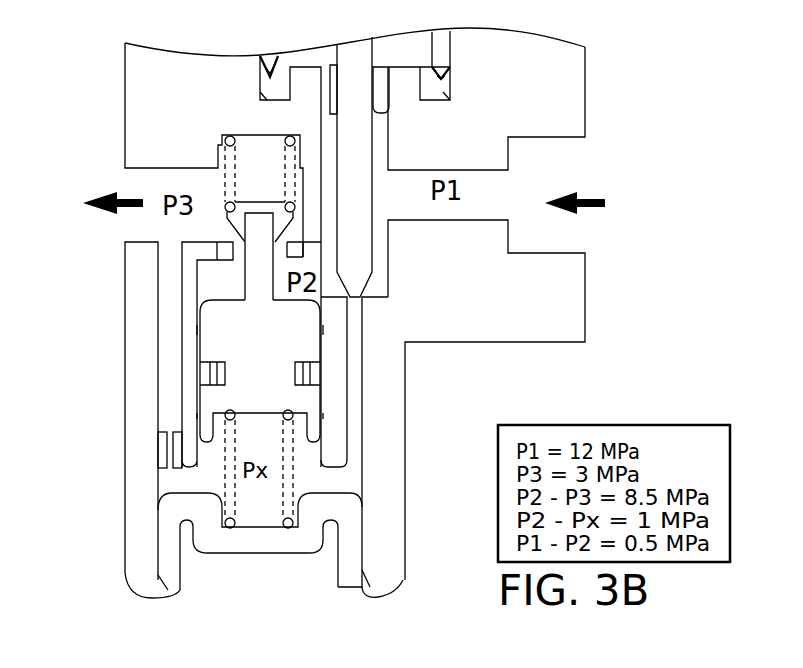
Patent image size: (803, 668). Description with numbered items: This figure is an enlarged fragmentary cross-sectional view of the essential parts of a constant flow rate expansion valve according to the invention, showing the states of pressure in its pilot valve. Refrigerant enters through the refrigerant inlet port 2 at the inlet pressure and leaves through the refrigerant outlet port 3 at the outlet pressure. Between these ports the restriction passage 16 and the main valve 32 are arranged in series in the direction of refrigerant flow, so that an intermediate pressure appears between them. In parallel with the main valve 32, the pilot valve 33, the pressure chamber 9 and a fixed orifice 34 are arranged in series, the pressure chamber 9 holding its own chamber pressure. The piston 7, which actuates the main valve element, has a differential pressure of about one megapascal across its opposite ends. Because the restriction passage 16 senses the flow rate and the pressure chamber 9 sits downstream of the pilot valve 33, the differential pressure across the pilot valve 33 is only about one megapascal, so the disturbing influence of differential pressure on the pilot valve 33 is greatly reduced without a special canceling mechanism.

The refrigerant inlet port 2 is at (567, 252).
The refrigerant outlet port 3 is at (125, 170).
The piston 7 is at (208, 400).
The pressure chamber 9 is at (165, 483).
The restriction passage 16 is at (388, 237).
The main valve 32 is at (222, 232).
The pilot valve 33 is at (369, 305).
The fixed orifice 34 is at (150, 450).